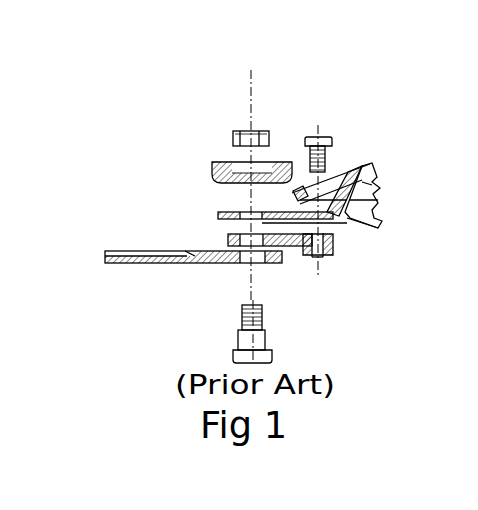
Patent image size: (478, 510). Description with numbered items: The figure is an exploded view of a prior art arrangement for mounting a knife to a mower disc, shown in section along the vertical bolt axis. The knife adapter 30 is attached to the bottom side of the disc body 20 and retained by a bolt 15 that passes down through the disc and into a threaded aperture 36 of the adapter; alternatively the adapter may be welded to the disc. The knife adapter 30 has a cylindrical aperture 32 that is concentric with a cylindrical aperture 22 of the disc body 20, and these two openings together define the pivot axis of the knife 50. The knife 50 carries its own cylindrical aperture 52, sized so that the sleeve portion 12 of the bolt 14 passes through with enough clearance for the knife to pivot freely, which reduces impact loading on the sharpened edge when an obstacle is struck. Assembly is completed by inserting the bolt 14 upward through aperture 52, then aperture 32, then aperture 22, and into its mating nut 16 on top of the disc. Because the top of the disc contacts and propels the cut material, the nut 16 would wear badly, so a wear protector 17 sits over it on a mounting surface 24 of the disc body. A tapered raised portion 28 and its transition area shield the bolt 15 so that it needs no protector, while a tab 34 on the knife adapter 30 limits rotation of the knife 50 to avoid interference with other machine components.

The sleeve portion 12 is at (266, 333).
The bolt 14 is at (273, 356).
The bolt 15 is at (333, 137).
The nut 16 is at (240, 131).
The wear protector 17 is at (218, 163).
The disc body 20 is at (373, 191).
The cylindrical aperture 22 is at (220, 213).
The mounting surface 24 is at (352, 176).
The raised portion 28 is at (296, 192).
The knife adapter 30 is at (288, 248).
The cylindrical aperture 32 is at (252, 236).
The tab 34 is at (335, 255).
The threaded aperture 36 is at (335, 246).
The knife 50 is at (148, 251).
The cylindrical aperture 52 is at (252, 257).